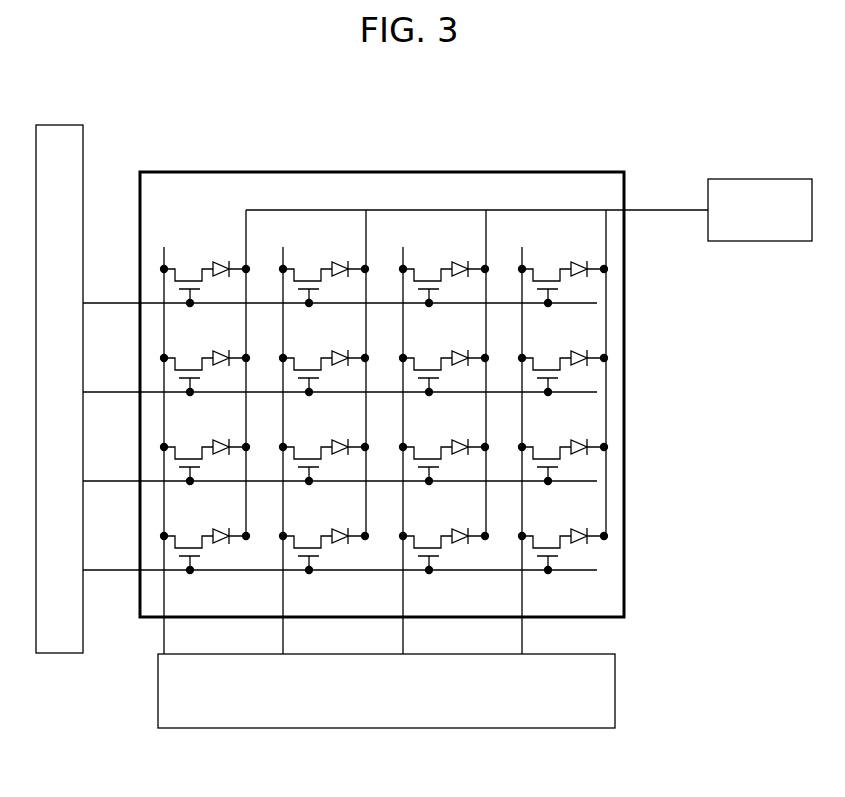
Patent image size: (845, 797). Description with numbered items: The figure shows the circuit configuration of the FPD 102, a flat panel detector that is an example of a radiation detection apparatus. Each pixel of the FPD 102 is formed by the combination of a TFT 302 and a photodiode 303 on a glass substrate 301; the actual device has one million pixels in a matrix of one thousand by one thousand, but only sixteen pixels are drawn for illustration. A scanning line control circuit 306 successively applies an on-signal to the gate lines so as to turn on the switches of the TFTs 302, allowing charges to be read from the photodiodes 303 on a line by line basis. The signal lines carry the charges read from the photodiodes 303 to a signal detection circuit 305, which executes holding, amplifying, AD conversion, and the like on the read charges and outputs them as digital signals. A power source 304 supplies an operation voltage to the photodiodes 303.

The FPD 102 is at (549, 151).
The glass substrate 301 is at (625, 330).
The TFT 302 is at (180, 291).
The photodiode 303 is at (222, 262).
The power source 304 is at (725, 241).
The signal detection circuit 305 is at (487, 728).
The scanning line control circuit 306 is at (57, 653).